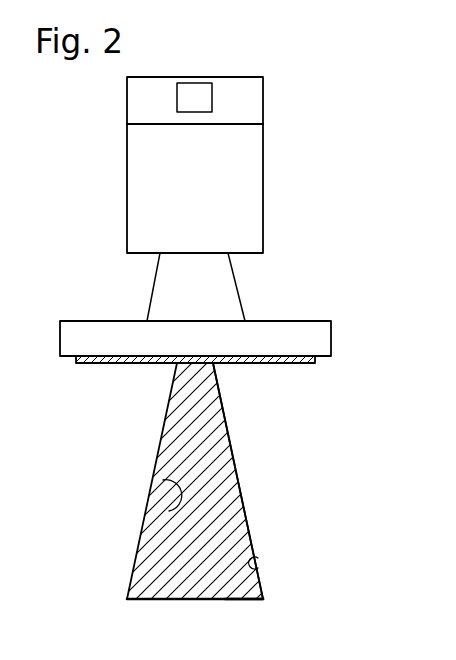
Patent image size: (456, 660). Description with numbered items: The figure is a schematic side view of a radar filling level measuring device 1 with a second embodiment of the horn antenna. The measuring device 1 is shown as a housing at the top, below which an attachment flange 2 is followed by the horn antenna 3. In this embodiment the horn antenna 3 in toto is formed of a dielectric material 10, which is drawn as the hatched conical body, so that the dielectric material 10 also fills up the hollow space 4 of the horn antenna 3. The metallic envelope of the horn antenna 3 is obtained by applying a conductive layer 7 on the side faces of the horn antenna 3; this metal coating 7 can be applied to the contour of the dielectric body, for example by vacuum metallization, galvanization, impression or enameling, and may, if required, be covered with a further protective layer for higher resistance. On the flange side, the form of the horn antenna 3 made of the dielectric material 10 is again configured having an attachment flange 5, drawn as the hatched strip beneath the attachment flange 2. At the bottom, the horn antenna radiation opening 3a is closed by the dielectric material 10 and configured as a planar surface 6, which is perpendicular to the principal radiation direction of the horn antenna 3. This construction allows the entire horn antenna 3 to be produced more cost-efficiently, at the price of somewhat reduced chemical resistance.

The filling level measuring device 1 is at (225, 190).
The attachment flange 2 is at (302, 330).
The horn antenna 3 is at (250, 568).
The horn antenna radiation opening 3a is at (202, 601).
The hollow space 4 is at (217, 500).
The attachment flange 5 is at (107, 360).
The planar surface 6 is at (220, 603).
The conductive layer 7 is at (228, 428).
The dielectric material 10 is at (168, 503).